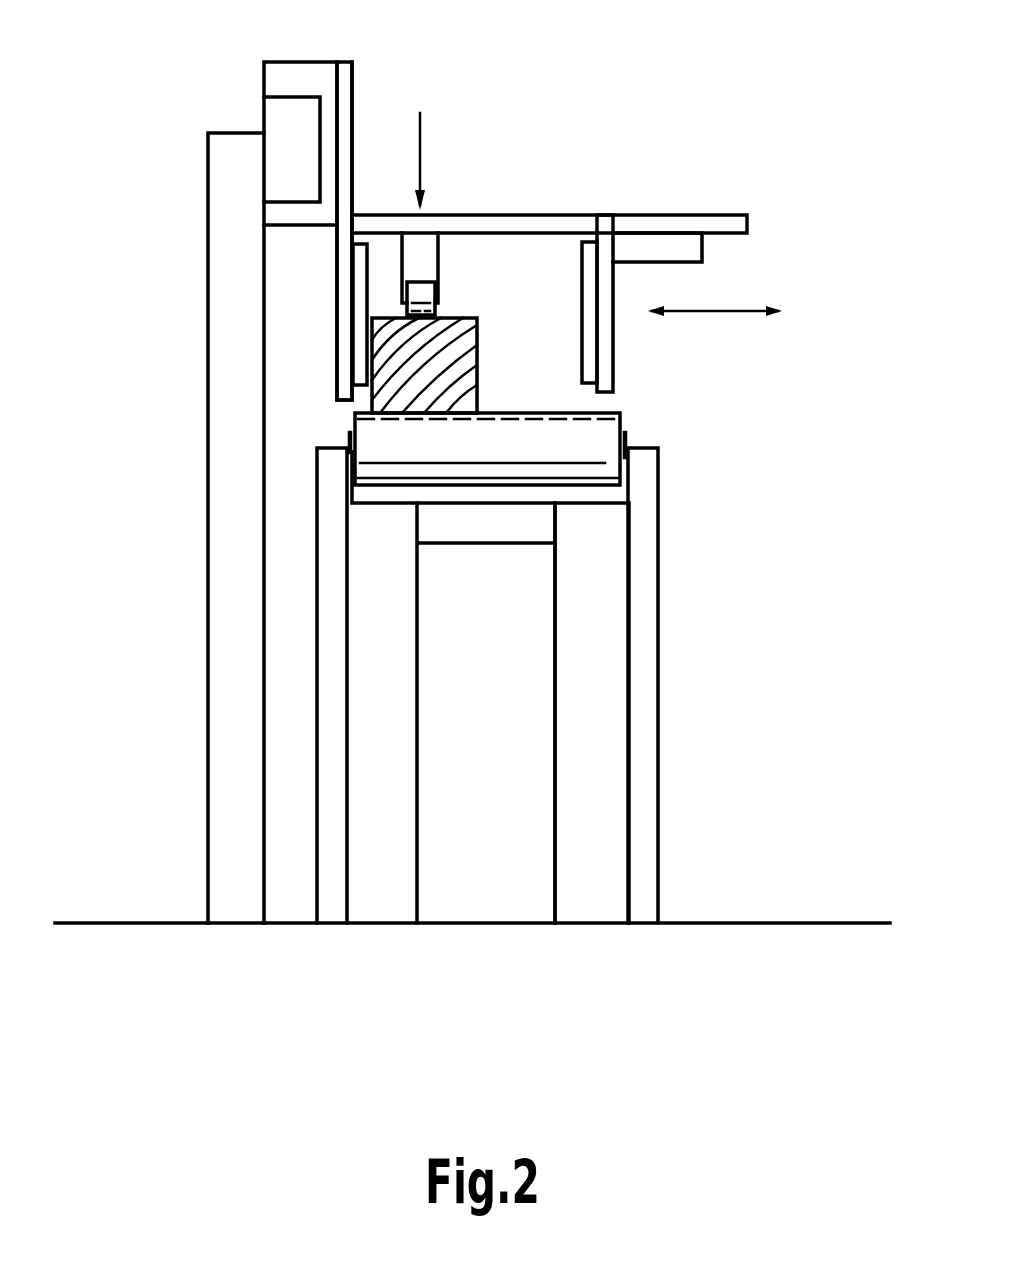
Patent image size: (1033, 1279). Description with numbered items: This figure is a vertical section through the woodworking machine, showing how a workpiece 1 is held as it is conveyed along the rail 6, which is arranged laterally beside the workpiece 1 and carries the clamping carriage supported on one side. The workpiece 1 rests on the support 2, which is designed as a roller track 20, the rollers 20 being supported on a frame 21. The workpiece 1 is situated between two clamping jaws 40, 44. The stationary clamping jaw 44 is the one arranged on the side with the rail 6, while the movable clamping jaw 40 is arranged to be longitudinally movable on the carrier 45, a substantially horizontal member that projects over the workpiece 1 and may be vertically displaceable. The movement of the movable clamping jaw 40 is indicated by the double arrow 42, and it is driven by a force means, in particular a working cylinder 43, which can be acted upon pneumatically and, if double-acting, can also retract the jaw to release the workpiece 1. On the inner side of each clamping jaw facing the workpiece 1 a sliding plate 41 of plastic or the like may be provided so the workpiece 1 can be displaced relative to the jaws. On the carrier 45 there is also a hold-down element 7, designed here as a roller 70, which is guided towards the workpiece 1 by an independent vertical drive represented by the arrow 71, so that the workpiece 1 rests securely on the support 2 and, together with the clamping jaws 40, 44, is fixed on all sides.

The workpiece 1 is at (455, 360).
The support 2 is at (633, 493).
The rail 6 is at (256, 103).
The hold-down element 7 is at (424, 262).
The roller track 20 is at (603, 432).
The frame 21 is at (618, 753).
The movable clamping jaw 40 is at (606, 302).
The sliding plate 41 is at (357, 318).
The double arrow 42 is at (717, 312).
The working cylinder 43 is at (675, 247).
The stationary clamping jaw 44 is at (340, 252).
The carrier 45 is at (515, 223).
The roller 70 is at (440, 313).
The arrow 71 is at (420, 138).